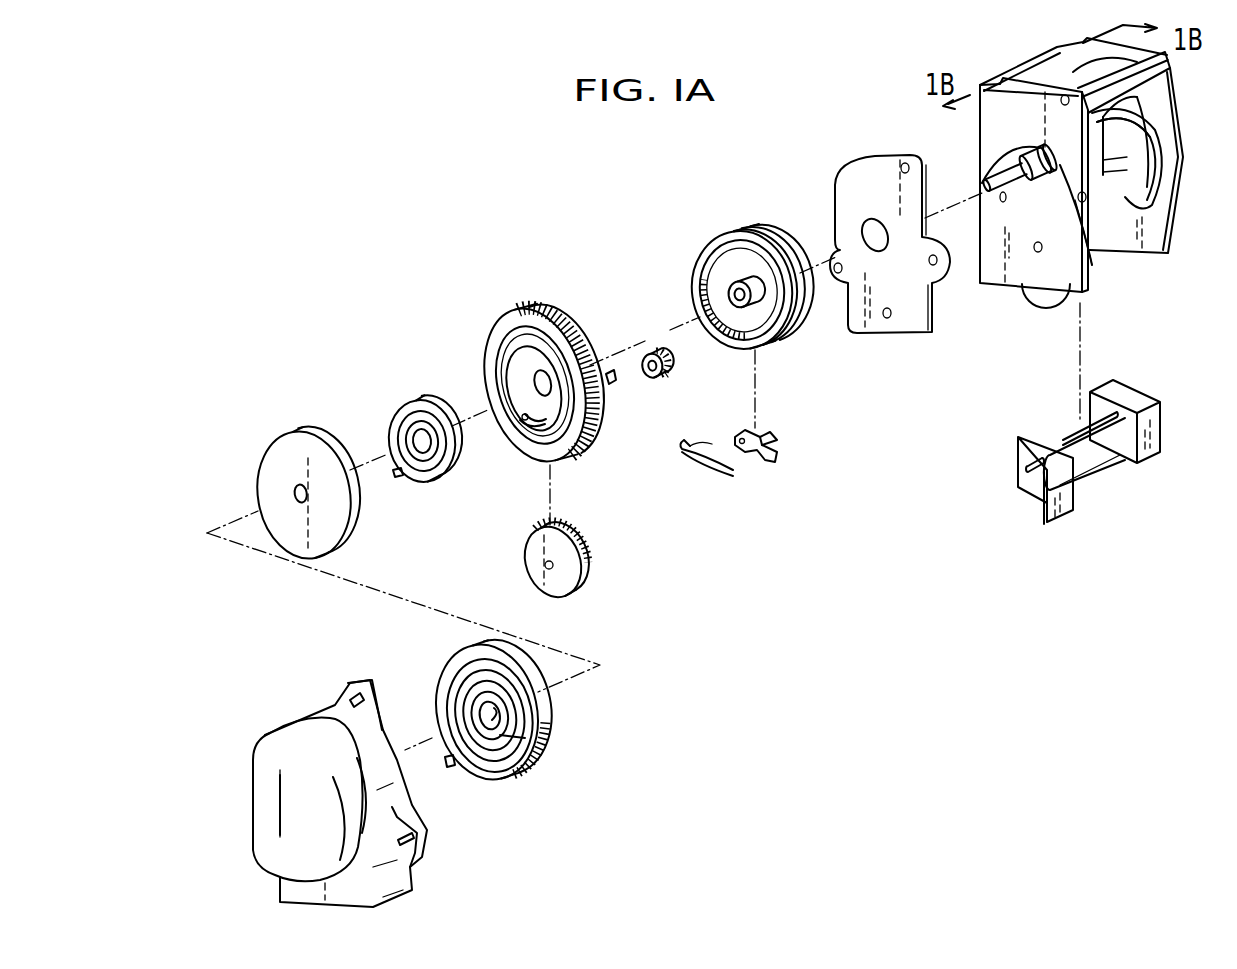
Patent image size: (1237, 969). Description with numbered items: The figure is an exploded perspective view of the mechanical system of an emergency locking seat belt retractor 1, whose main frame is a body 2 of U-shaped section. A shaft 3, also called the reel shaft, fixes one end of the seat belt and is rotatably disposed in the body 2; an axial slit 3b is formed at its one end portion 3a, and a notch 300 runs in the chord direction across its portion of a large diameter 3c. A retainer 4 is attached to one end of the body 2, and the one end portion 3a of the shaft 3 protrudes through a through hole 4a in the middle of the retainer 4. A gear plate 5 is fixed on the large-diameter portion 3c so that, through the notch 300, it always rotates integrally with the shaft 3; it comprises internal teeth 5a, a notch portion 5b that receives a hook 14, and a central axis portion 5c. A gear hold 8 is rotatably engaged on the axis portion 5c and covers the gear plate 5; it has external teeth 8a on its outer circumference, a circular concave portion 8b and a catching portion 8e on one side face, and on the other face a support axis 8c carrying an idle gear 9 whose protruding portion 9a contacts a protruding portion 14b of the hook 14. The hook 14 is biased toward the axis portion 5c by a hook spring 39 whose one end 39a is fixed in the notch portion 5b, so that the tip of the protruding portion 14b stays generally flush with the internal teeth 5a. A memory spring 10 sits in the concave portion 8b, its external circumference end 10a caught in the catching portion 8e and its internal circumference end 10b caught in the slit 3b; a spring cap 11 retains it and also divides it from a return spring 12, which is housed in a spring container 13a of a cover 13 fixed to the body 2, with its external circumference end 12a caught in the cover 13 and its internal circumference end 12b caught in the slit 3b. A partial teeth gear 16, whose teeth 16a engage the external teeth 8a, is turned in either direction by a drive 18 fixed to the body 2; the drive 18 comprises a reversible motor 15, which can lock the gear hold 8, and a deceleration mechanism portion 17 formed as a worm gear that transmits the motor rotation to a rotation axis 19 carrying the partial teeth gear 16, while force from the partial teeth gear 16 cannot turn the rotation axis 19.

The emergency locking seat belt retractor 1 is at (772, 552).
The body 2 is at (1035, 72).
The shaft 3 is at (1117, 138).
The one end portion 3a is at (1012, 166).
The axial slit 3b is at (987, 186).
The portion of a large diameter 3c is at (1100, 188).
The notch 300 is at (1092, 268).
The retainer 4 is at (878, 180).
The through hole 4a is at (868, 225).
The gear plate 5 is at (792, 244).
The internal teeth 5a is at (735, 262).
The notch portion 5b is at (750, 338).
The axis portion 5c is at (728, 290).
The gear hold 8 is at (532, 294).
The external teeth 8a is at (574, 322).
The circular concave portion 8b is at (523, 375).
The support axis 8c is at (616, 388).
The catching portion 8e is at (530, 432).
The idle gear 9 is at (651, 350).
The protruding portion 9a is at (668, 379).
The memory spring 10 is at (418, 403).
The external circumference end 10a is at (399, 478).
The internal circumference end 10b is at (410, 440).
The spring cap 11 is at (270, 470).
The return spring 12 is at (432, 684).
The external circumference end 12a is at (452, 770).
The internal circumference end 12b is at (525, 738).
The cover 13 is at (266, 761).
The spring container 13a is at (267, 803).
The hook 14 is at (757, 465).
The protruding portion 14b is at (770, 433).
The motor 15 is at (1088, 465).
The partial teeth gear 16 is at (583, 575).
The teeth 16a is at (578, 535).
The deceleration mechanism portion 17 is at (1135, 395).
The drive 18 is at (1066, 440).
The rotation axis 19 is at (1027, 470).
The hook spring 39 is at (704, 466).
The one end 39a is at (680, 450).